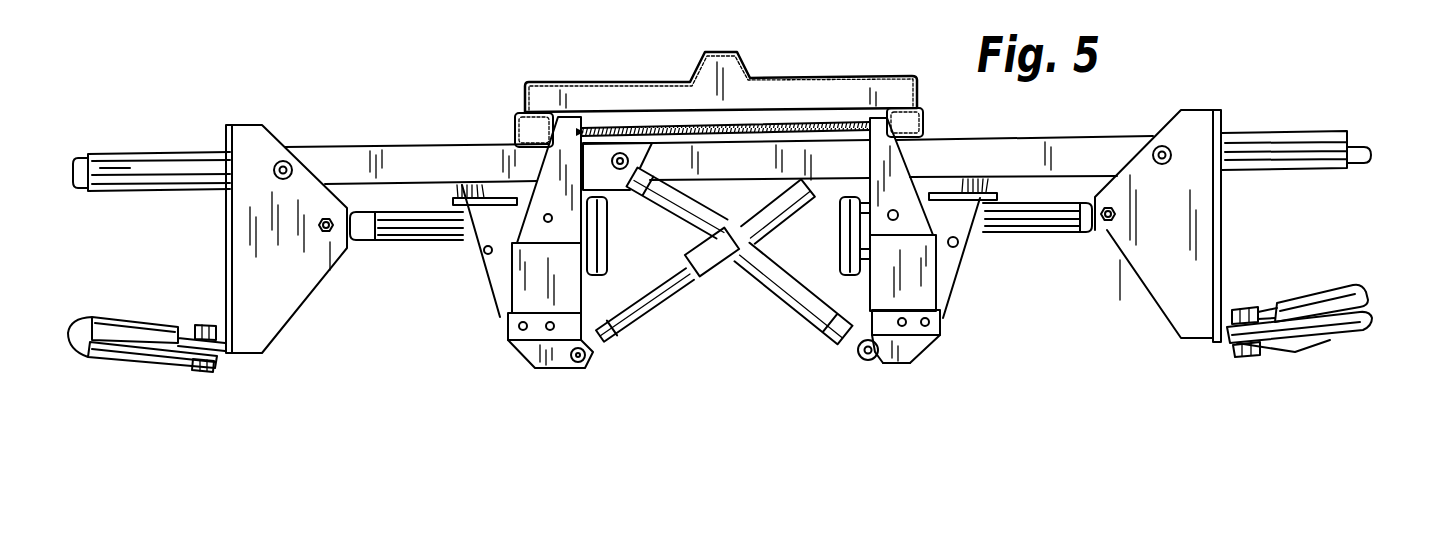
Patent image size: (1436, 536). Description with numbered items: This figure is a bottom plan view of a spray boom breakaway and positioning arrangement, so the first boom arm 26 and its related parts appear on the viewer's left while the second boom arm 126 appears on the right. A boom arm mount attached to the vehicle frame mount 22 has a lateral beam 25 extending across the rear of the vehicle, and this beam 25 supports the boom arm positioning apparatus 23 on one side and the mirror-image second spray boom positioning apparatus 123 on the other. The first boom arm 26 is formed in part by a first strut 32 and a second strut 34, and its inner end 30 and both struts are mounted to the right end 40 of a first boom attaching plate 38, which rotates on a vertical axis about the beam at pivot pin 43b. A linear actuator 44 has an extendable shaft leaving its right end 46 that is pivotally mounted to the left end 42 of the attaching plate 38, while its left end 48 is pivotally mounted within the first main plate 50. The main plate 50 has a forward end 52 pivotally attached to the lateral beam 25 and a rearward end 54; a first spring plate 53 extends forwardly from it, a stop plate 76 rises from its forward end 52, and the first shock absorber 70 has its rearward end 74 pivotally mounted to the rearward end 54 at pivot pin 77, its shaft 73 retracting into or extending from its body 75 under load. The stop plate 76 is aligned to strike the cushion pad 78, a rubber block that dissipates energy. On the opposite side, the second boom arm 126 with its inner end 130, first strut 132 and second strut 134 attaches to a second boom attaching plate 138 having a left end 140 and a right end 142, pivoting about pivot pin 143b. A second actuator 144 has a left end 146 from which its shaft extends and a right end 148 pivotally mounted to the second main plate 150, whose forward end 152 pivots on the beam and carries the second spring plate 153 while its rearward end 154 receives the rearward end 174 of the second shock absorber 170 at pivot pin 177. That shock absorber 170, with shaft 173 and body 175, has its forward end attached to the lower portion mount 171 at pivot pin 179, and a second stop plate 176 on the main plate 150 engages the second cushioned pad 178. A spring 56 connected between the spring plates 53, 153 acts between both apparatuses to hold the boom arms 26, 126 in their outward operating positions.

The vehicle frame mount 22 is at (768, 95).
The boom arm positioning apparatus 23 is at (546, 272).
The lateral beam 25 is at (398, 152).
The first boom arm 26 is at (156, 269).
The inner end 30 is at (207, 157).
The first strut 32 is at (130, 156).
The second strut 34 is at (85, 325).
The first boom attaching plate 38 is at (263, 318).
The right end 40 is at (225, 235).
The left end 42 is at (324, 248).
The pivot pin 43b is at (286, 162).
The linear actuator 44 is at (401, 232).
The right end 46 is at (370, 242).
The left end 48 is at (590, 256).
The first main plate 50 is at (512, 298).
The forward end 52 is at (485, 228).
The first spring plate 53 is at (570, 197).
The rearward end 54 is at (565, 364).
The spring 56 is at (790, 125).
The first shock absorber 70 is at (737, 285).
The shaft 73 is at (650, 306).
The rearward end 74 is at (622, 332).
The body 75 is at (788, 200).
The stop plate 76 is at (452, 202).
The pivot pin 77 is at (592, 357).
The cushion pad 78 is at (470, 184).
The second spray boom positioning apparatus 123 is at (906, 285).
The second boom arm 126 is at (1322, 252).
The inner end 130 is at (1240, 150).
The first strut 132 is at (1357, 145).
The second strut 134 is at (1367, 298).
The second boom attaching plate 138 is at (1183, 313).
The left end 140 is at (1220, 231).
The right end 142 is at (1105, 232).
The pivot pin 143b is at (1161, 147).
The second actuator 144 is at (1040, 213).
The left end 146 is at (1092, 230).
The right end 148 is at (845, 243).
The second main plate 150 is at (928, 291).
The forward end 152 is at (957, 213).
The second spring plate 153 is at (912, 224).
The rearward end 154 is at (925, 340).
The second shock absorber 170 is at (776, 316).
The lower portion mount 171 is at (597, 146).
The shaft 173 is at (686, 194).
The rearward end 174 is at (830, 355).
The body 175 is at (760, 246).
The second stop plate 176 is at (1000, 195).
The pivot pin 177 is at (889, 366).
The second cushioned pad 178 is at (965, 178).
The pivot pin 179 is at (618, 152).